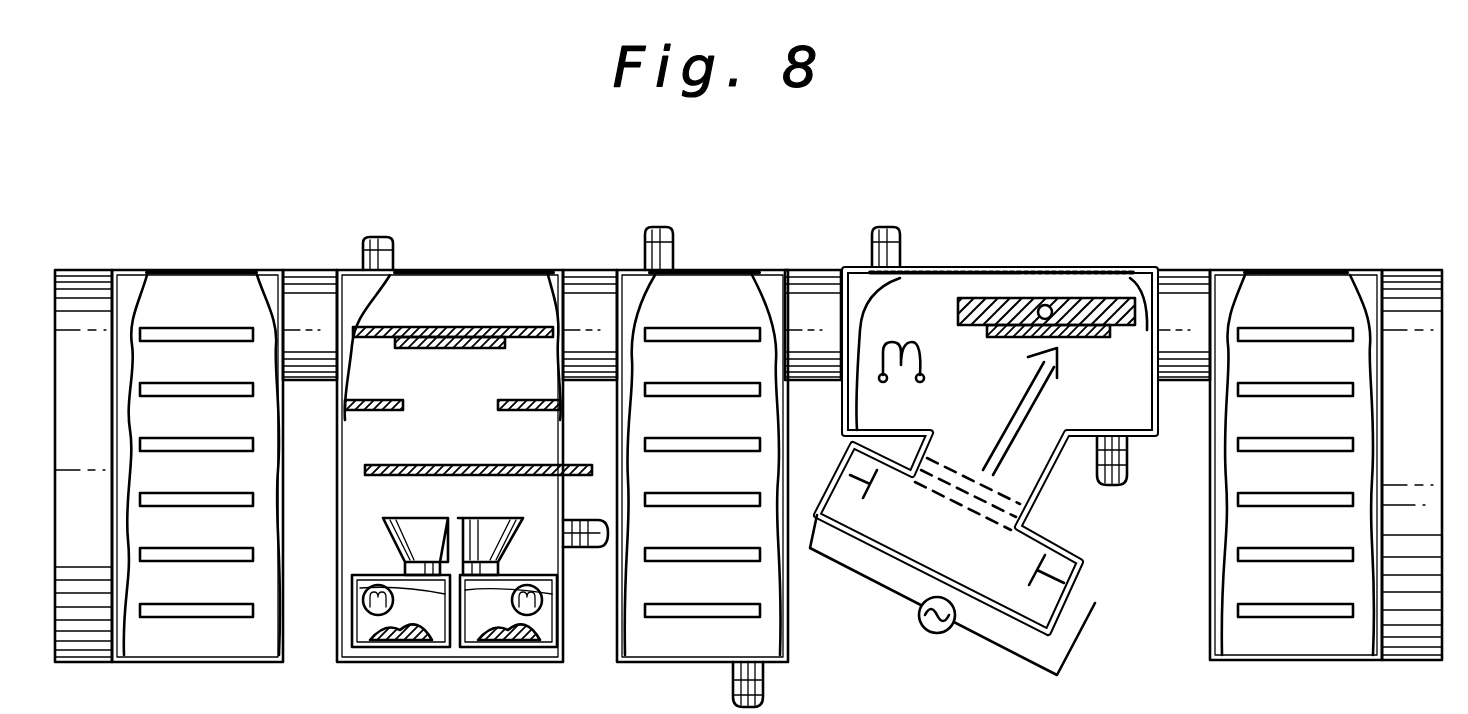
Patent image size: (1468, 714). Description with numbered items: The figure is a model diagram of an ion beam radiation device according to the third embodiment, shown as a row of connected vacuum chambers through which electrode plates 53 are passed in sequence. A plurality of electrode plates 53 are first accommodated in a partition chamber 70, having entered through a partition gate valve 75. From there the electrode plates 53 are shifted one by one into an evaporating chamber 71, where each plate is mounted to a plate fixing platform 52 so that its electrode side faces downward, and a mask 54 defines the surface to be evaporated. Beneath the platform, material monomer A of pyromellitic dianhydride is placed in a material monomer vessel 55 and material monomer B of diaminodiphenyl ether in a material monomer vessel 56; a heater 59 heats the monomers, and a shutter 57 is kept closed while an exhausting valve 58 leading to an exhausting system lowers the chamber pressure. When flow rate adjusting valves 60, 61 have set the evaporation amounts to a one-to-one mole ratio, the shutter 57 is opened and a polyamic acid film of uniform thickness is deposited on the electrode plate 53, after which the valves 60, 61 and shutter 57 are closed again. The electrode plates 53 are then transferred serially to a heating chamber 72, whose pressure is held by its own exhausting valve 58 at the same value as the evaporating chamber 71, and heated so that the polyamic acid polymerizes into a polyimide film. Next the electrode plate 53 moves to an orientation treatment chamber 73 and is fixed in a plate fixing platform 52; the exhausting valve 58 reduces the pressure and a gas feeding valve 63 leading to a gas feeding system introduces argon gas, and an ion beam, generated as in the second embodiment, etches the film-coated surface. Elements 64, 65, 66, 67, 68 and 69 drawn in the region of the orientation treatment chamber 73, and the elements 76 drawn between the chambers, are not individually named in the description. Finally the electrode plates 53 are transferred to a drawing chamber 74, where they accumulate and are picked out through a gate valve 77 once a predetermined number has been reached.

The plate fixing platform 52 is at (487, 332).
The electrode plate 53 is at (230, 335).
The mask 54 is at (380, 402).
The material monomer vessel 55 is at (437, 648).
The material monomer vessel 56 is at (545, 648).
The shutter 57 is at (492, 466).
The exhausting valve 58 is at (580, 548).
The heater 59 is at (355, 603).
The flow rate adjusting valve 60 is at (405, 568).
The flow rate adjusting valve 61 is at (500, 572).
The gas feeding valve 63 is at (385, 245).
The electrode 64 is at (1003, 527).
The discharge path 65 is at (1020, 517).
The electrode 66 is at (1022, 500).
The high-frequency power source 67 is at (940, 635).
The discharge housing 68 is at (880, 530).
The heater filament 69 is at (898, 342).
The partition chamber 70 is at (185, 285).
The evaporating chamber 71 is at (480, 285).
The heating chamber 72 is at (715, 283).
The orientation treatment chamber 73 is at (975, 282).
The drawing chamber 74 is at (1265, 283).
The partition gate valve 75 is at (95, 283).
The partition wall 76 is at (303, 298).
The gate valve 77 is at (1408, 287).